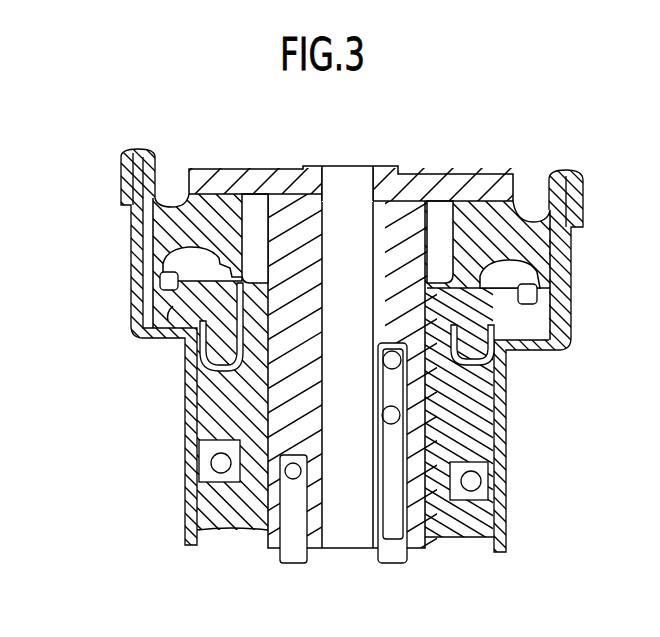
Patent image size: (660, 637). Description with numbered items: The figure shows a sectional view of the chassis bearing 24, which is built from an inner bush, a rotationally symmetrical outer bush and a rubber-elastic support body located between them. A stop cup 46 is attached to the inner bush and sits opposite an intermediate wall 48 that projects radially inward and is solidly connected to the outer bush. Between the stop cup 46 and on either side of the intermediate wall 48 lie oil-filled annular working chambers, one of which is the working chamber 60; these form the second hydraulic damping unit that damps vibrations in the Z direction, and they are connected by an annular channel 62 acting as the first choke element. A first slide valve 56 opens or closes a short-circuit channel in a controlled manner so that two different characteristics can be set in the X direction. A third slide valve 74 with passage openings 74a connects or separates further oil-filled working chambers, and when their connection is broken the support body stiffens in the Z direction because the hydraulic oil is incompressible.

The chassis bearing 24 is at (122, 146).
The stop cup 46 is at (492, 183).
The intermediate wall 48 is at (149, 337).
The first slide valve 56 is at (292, 493).
The annular working chamber 60 is at (483, 348).
The annular channel 62 is at (530, 294).
The third slide valve 74 is at (388, 531).
The passage openings 74a is at (425, 394).